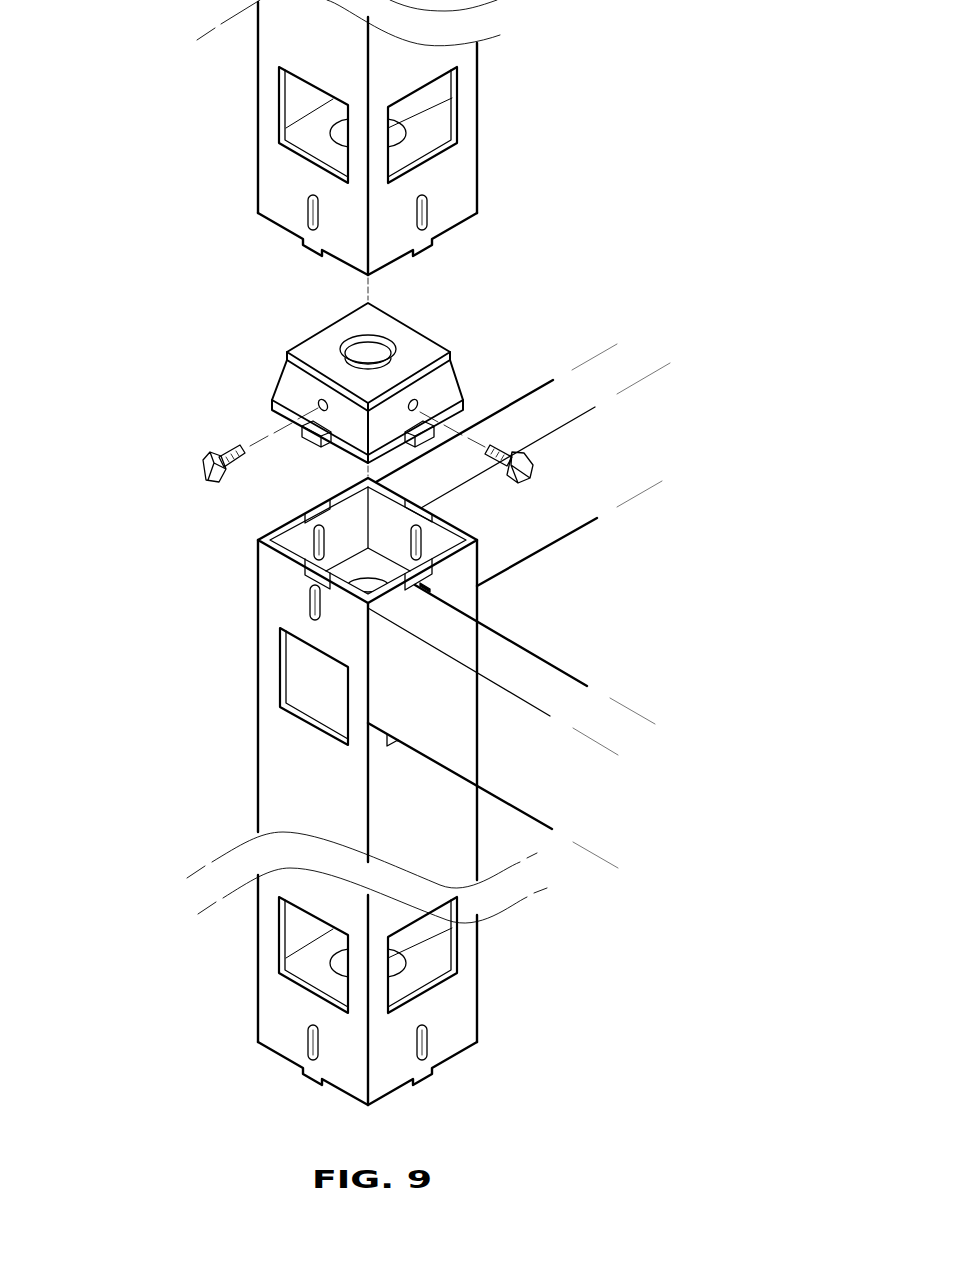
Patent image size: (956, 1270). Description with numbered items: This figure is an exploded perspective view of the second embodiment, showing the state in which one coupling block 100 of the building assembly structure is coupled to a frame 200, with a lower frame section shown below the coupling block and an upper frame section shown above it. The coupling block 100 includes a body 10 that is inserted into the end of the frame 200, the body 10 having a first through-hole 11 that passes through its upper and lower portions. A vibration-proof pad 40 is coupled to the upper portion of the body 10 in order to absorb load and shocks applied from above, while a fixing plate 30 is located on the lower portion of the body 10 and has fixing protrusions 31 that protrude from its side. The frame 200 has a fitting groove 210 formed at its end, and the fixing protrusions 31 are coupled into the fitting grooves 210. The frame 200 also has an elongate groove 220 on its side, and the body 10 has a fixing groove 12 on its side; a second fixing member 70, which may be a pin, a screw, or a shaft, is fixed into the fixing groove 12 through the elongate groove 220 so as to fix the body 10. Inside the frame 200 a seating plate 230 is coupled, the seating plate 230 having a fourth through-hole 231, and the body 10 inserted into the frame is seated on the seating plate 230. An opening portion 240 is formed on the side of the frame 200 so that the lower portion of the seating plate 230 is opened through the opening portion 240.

The coupling block 100 is at (344, 379).
The body 10 is at (445, 377).
The first through-hole 11 is at (372, 358).
The fixing groove 12 is at (317, 405).
The fixing plate 30 is at (457, 415).
The fixing protrusions 31 is at (300, 433).
The vibration-proof pad 40 is at (310, 350).
The second fixing member 70 is at (200, 468).
The frame 200 is at (470, 108).
The fitting groove 210 is at (315, 237).
The elongate groove 220 is at (425, 205).
The seating plate 230 is at (310, 125).
The fourth through-hole 231 is at (392, 136).
The opening portion 240 is at (298, 677).